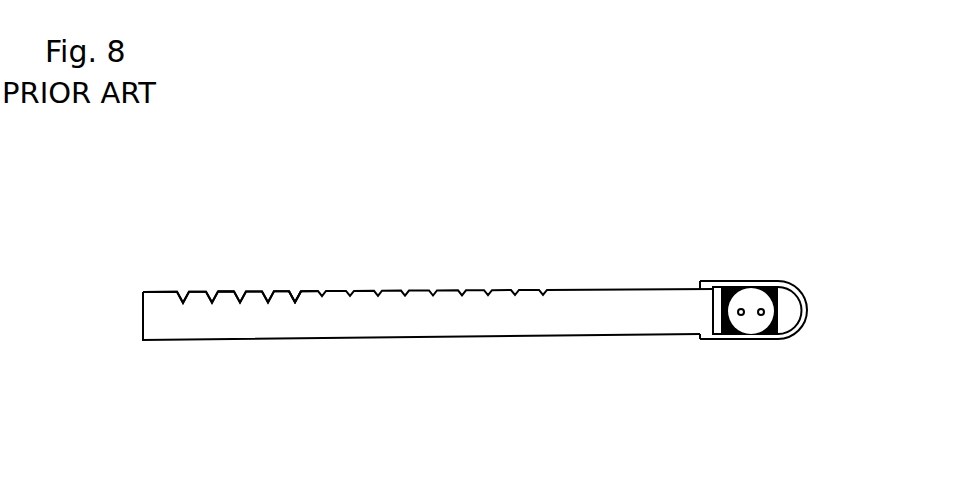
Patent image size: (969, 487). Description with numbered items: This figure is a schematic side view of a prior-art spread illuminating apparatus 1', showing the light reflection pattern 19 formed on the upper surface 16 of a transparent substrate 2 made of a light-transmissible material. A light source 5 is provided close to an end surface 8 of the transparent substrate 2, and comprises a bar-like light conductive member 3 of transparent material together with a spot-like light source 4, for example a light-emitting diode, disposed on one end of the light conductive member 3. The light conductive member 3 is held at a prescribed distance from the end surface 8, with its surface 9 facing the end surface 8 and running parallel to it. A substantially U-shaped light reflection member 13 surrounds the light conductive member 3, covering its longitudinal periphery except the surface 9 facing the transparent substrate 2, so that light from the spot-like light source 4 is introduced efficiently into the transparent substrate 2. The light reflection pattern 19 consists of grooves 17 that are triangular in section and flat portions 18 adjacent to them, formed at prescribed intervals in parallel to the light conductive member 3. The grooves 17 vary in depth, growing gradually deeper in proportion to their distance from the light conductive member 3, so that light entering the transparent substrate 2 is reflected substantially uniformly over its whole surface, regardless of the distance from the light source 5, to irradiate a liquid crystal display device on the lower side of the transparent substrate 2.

The spread illuminating apparatus 1' is at (475, 229).
The transparent substrate 2 is at (332, 322).
The light conductive member 3 is at (775, 340).
The spot-like light source 4 is at (750, 322).
The light source 5 is at (695, 404).
The end surface 8 is at (712, 312).
The surface 9 is at (712, 322).
The light reflection member 13 is at (805, 295).
The upper surface 16 is at (477, 288).
The grooves 17 is at (293, 290).
The flat portions 18 is at (225, 290).
The light reflection pattern 19 is at (208, 191).